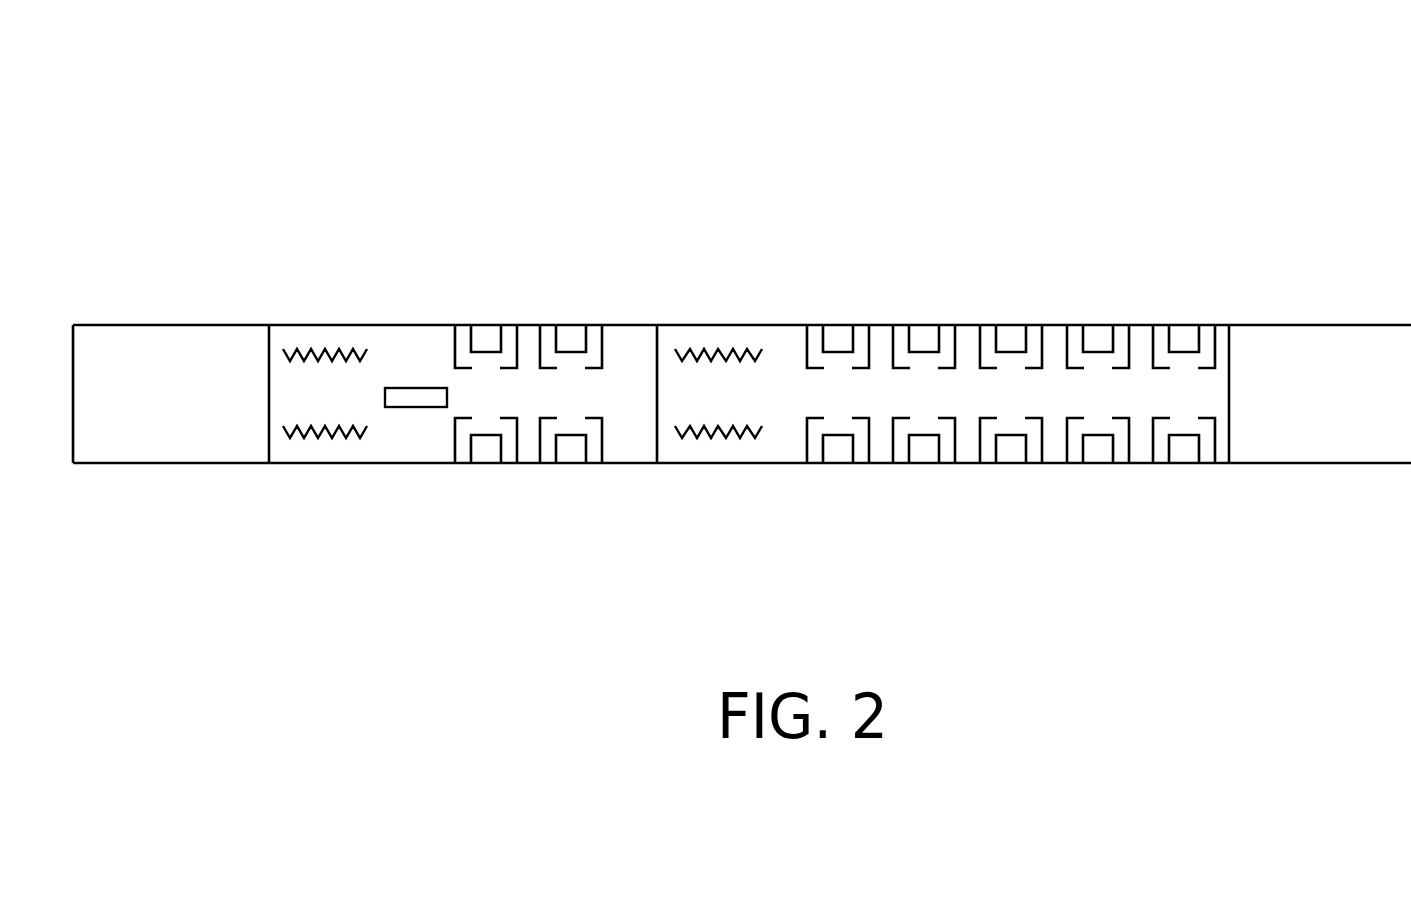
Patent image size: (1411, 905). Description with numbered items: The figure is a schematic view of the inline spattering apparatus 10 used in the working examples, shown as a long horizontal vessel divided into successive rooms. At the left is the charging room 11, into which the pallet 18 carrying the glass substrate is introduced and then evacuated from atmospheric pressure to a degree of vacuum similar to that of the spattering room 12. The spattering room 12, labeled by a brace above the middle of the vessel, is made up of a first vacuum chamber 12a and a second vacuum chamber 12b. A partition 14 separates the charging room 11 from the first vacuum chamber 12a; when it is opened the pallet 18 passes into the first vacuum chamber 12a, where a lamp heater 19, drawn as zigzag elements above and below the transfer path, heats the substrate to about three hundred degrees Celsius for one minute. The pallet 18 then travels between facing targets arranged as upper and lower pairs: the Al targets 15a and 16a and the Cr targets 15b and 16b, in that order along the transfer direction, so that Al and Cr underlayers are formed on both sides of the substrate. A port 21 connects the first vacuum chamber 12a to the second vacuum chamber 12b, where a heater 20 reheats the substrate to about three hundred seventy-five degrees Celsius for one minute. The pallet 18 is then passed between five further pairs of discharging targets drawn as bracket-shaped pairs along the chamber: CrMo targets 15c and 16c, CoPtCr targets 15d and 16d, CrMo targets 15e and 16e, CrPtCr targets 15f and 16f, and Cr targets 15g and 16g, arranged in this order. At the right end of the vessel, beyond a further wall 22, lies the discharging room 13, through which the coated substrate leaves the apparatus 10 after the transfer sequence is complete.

The inline spattering apparatus 10 is at (1069, 109).
The charging room 11 is at (205, 338).
The spattering room 12 is at (817, 163).
The first vacuum chamber 12a is at (650, 325).
The second vacuum chamber 12b is at (783, 325).
The discharging room 13 is at (1348, 347).
The partition 14 is at (269, 430).
The Al target 15a is at (486, 340).
The Cr target 15b is at (571, 340).
The CrMo target 15c is at (838, 340).
The CoPtCr target 15d is at (924, 340).
The CrMo target 15e is at (1011, 340).
The CrPtCr target 15f is at (1098, 340).
The Cr target 15g is at (1184, 340).
The Al target 16a is at (455, 445).
The Cr target 16b is at (540, 445).
The CrMo target 16c is at (807, 445).
The CoPtCr target 16d is at (893, 445).
The CrMo target 16e is at (980, 445).
The CrPtCr target 16f is at (1067, 445).
The Cr target 16g is at (1153, 445).
The pallet 18 is at (418, 388).
The lamp heater 19 is at (330, 443).
The heater 20 is at (722, 440).
The port 21 is at (657, 430).
The gate valve between spattering room and discharging room 22 is at (1230, 425).